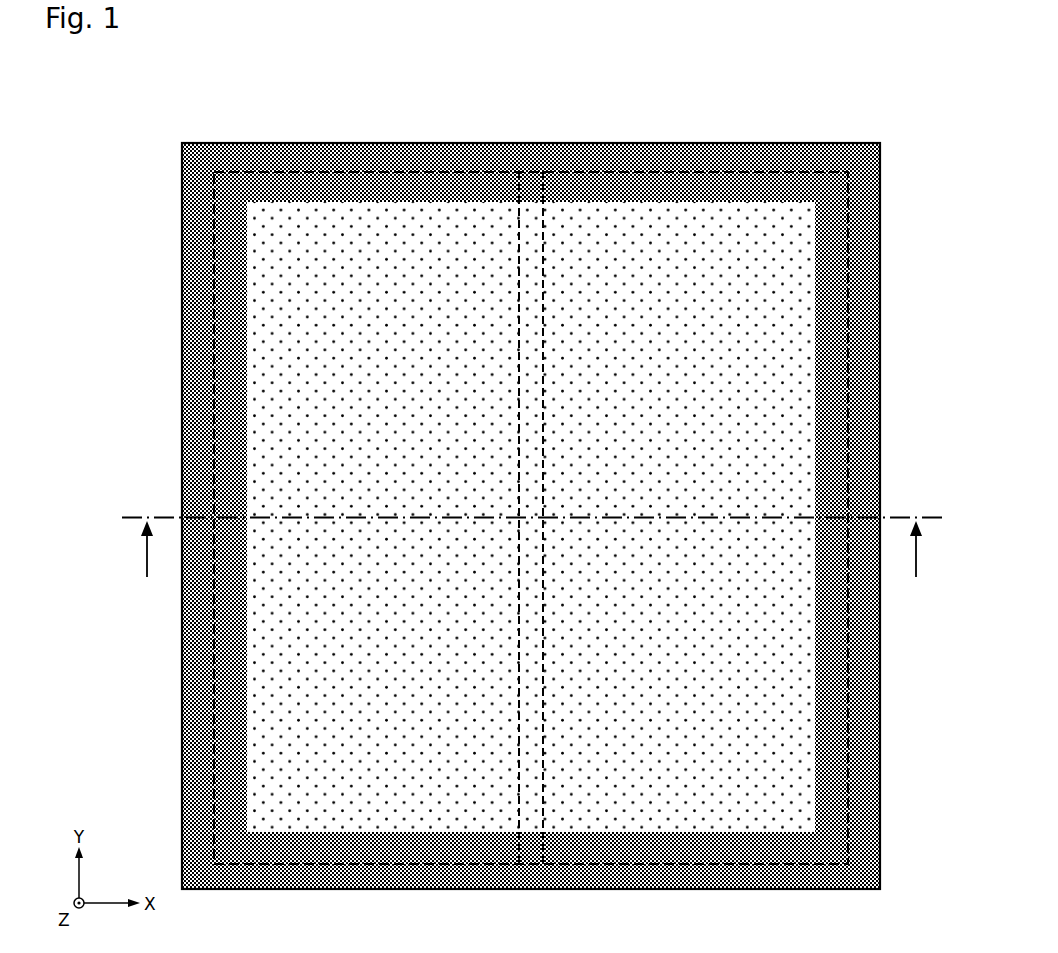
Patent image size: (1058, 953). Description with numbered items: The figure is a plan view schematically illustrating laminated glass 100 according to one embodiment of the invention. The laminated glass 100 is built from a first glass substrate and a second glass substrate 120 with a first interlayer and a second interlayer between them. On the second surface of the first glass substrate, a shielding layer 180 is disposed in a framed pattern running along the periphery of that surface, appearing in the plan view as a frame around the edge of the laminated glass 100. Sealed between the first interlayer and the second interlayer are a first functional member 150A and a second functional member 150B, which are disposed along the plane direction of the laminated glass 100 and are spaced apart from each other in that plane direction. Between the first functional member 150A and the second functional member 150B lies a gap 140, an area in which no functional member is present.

The laminated glass 100 is at (860, 82).
The second glass substrate 120 is at (856, 143).
The gap 140 is at (531, 235).
The first functional member 150A is at (310, 172).
The second functional member 150B is at (750, 172).
The shielding layer 180 is at (870, 233).